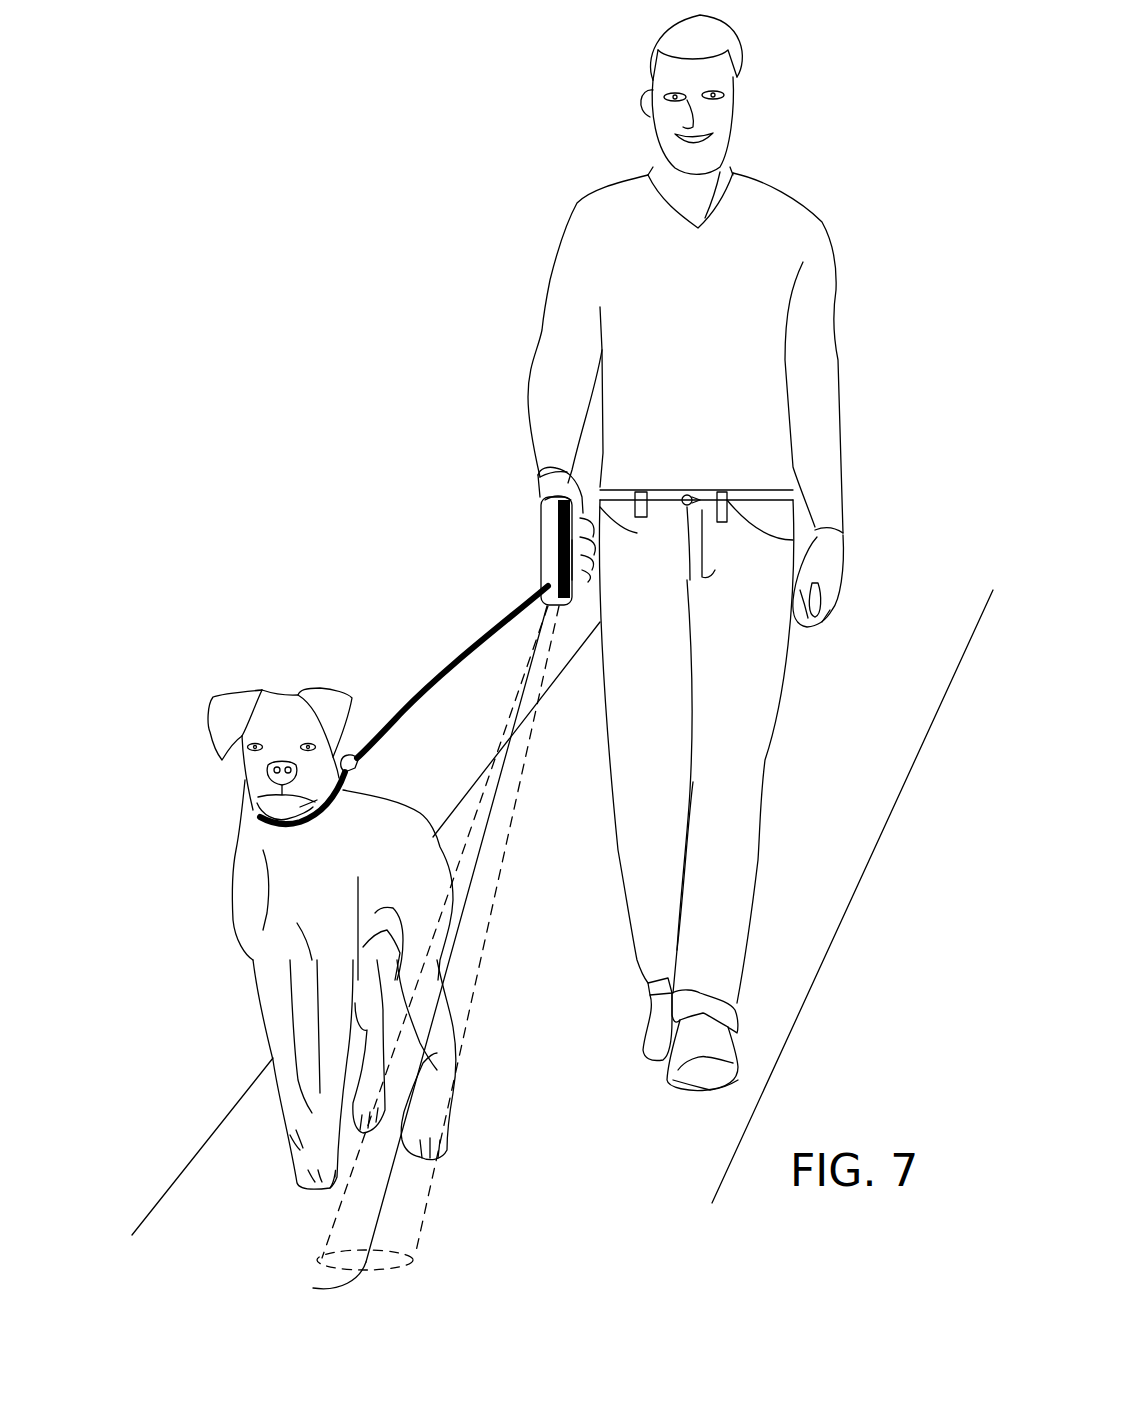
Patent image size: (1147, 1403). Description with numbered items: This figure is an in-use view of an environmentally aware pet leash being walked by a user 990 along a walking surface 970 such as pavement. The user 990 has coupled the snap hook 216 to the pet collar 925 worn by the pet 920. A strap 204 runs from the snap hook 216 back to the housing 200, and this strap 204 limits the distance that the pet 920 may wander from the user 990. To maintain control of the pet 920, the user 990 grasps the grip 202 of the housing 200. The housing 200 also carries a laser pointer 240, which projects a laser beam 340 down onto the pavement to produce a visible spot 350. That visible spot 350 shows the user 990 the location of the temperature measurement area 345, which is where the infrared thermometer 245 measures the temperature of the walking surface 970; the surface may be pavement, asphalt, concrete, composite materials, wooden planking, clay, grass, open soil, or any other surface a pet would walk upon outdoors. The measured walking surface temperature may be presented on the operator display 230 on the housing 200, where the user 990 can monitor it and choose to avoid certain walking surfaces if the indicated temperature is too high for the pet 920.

The user 990 is at (582, 212).
The housing 200 is at (545, 550).
The operator display 230 is at (547, 503).
The grip 202 is at (573, 570).
The strap 204 is at (455, 652).
The infrared thermometer 245 is at (560, 606).
The laser pointer 240 is at (556, 607).
The laser beam 340 is at (388, 1185).
The temperature measurement area 345 is at (392, 1255).
The visible spot 350 is at (313, 1288).
The pet 920 is at (238, 875).
The pet collar 925 is at (343, 797).
The snap hook 216 is at (368, 762).
The ground 970 is at (205, 1173).